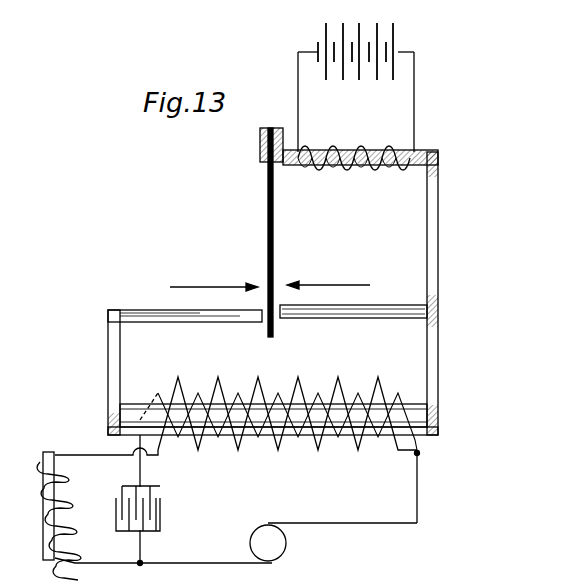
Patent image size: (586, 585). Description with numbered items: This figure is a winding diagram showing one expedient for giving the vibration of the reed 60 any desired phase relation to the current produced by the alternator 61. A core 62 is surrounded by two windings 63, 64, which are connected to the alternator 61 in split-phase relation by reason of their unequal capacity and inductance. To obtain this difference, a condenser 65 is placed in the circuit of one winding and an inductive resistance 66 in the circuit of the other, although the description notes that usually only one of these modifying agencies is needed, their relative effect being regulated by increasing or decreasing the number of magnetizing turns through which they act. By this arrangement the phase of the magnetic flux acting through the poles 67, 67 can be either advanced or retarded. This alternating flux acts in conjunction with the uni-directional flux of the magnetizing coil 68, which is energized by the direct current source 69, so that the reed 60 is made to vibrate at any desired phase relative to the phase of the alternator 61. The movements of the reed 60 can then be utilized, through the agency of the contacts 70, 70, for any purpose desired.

The reed 60 is at (268, 190).
The alternator 61 is at (279, 508).
The core 62 is at (135, 410).
The winding 63 is at (300, 441).
The winding 64 is at (273, 446).
The condenser 65 is at (161, 511).
The inductive resistance 66 is at (58, 497).
The poles 67 is at (252, 323).
The magnetizing coil 68 is at (338, 150).
The direct current source 69 is at (356, 87).
The contacts 70 is at (205, 286).